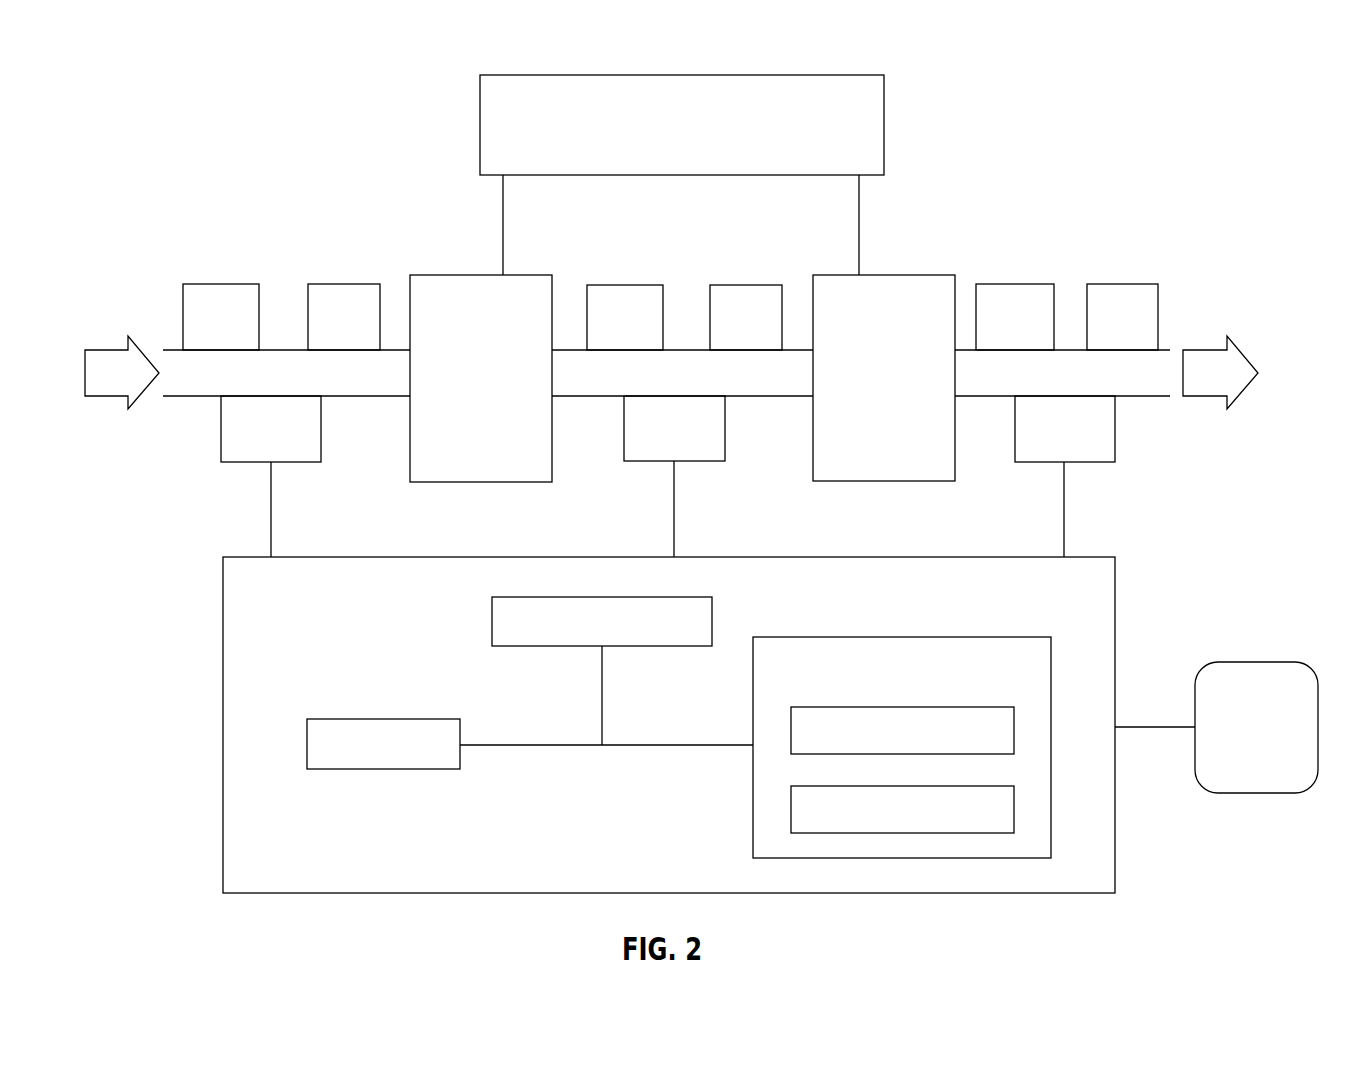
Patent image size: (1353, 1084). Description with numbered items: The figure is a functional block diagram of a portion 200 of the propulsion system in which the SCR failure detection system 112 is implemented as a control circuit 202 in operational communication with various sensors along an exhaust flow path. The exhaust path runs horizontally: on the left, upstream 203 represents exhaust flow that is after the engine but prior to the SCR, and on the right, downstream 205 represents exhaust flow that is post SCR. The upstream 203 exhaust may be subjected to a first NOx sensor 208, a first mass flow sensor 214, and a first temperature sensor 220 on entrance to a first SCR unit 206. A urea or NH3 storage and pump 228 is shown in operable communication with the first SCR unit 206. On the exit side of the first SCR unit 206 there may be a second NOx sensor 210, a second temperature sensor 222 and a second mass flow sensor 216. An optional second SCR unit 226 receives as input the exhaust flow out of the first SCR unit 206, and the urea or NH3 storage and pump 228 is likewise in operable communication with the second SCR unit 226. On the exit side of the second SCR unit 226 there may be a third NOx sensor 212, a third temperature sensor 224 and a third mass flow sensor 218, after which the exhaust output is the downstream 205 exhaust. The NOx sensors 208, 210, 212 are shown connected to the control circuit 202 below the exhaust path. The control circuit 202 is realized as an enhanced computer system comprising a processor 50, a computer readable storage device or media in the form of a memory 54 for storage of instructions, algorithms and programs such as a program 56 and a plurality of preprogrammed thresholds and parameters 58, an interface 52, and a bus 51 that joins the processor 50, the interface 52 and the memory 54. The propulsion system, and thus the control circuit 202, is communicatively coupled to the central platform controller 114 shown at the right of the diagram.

The portion of the propulsion system 200 is at (1188, 104).
The upstream 203 is at (123, 387).
The downstream 205 is at (1222, 385).
The first SCR unit 206 is at (499, 472).
The second SCR unit 226 is at (903, 473).
The urea or NH3 storage and pump 228 is at (849, 75).
The first mass flow sensor 214 is at (206, 284).
The first temperature sensor 220 is at (333, 284).
The second temperature sensor 222 is at (632, 285).
The second mass flow sensor 216 is at (762, 285).
The third temperature sensor 224 is at (1000, 284).
The third mass flow sensor 218 is at (1130, 284).
The first NOx sensor 208 is at (237, 462).
The second NOx sensor 210 is at (645, 461).
The third NOx sensor 212 is at (1038, 462).
The SCR failure detection system 112 is at (1153, 543).
The control circuit 202 is at (342, 638).
The processor 50 is at (345, 769).
The bus 51 is at (630, 746).
The interface 52 is at (690, 597).
The memory 54 is at (993, 637).
The program 56 is at (993, 707).
The preprogrammed thresholds and parameters 58 is at (993, 786).
The central platform controller 114 is at (1274, 738).